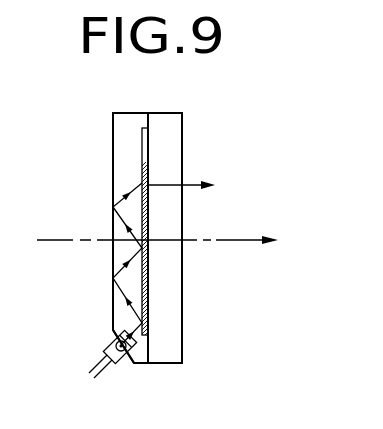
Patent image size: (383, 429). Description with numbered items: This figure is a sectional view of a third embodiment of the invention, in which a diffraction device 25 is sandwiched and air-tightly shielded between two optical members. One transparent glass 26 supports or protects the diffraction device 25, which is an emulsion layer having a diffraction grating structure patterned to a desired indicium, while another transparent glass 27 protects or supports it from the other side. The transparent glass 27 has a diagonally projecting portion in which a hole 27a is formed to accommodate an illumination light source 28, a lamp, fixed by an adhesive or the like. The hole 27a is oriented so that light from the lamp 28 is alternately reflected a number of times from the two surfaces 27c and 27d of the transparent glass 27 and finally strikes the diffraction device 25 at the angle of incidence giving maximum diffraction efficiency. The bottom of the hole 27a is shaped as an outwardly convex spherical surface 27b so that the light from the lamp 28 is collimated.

The diffraction device 25 is at (148, 176).
The transparent glass 26 is at (171, 124).
The transparent glass 27 is at (124, 138).
The hole 27a is at (113, 378).
The spherical surface 27b is at (122, 330).
The surface of transparent glass plate 27c is at (104, 197).
The surface of transparent glass plate 27d is at (157, 290).
The illumination light source 28 is at (129, 363).